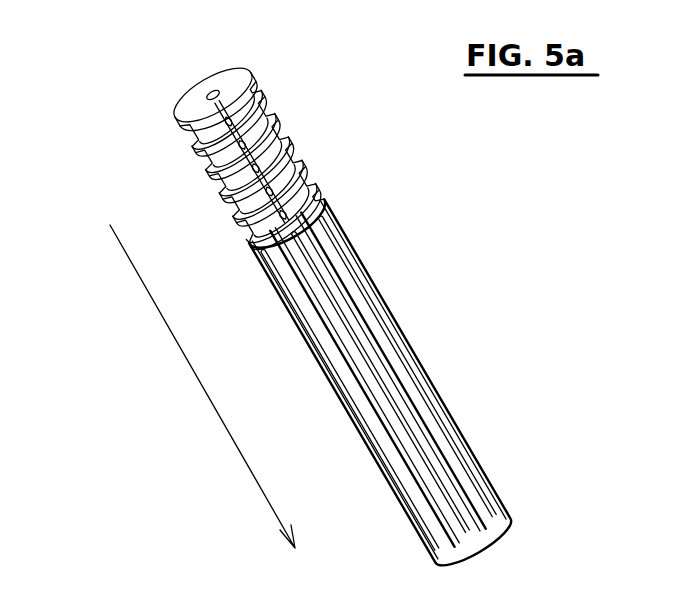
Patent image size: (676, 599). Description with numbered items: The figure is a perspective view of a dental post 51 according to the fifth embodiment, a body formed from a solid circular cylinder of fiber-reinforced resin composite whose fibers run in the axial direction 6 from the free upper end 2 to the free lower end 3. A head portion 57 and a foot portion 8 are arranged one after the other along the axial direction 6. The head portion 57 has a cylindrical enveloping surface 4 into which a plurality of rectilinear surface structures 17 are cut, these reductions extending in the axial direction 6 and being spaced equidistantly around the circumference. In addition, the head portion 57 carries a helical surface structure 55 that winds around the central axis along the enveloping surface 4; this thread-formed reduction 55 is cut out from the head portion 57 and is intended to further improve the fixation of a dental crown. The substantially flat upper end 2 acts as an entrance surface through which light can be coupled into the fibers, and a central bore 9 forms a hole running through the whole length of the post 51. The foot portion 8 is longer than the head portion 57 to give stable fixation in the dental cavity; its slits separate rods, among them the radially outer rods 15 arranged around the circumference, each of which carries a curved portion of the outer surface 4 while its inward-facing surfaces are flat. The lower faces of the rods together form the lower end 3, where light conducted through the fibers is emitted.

The free upper end 2 is at (228, 72).
The central bore 9 is at (207, 88).
The surface structures 17 is at (315, 165).
The head portion 57 is at (218, 200).
The helical surface structure 55 is at (248, 233).
The enveloping surface 4 is at (385, 312).
The foot portion 8 is at (378, 365).
The radially outer rods 15 is at (451, 469).
The free lower end 3 is at (483, 547).
The axial direction 6 is at (190, 372).
The dental post 51 is at (116, 69).